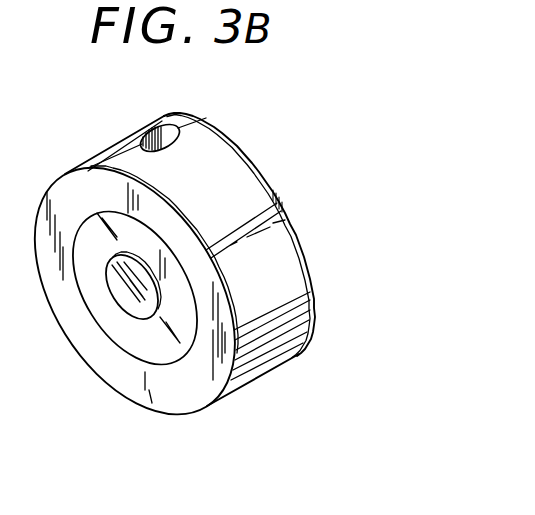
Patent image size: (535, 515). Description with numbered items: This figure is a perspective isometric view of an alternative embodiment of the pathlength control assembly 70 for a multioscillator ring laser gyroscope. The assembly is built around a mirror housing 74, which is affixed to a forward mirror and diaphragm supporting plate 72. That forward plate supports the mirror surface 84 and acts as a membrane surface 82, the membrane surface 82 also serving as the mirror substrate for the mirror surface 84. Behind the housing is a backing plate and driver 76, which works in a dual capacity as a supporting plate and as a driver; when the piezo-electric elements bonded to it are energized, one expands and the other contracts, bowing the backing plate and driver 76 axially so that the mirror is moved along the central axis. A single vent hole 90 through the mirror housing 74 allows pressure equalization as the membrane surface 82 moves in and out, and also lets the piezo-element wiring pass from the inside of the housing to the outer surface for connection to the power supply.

The pathlength control assembly 70 is at (281, 166).
The forward mirror and diaphragm supporting plate 72 is at (258, 323).
The mirror housing 74 is at (117, 143).
The backing plate and driver 76 is at (343, 236).
The membrane surface 82 is at (132, 345).
The mirror surface 84 is at (128, 302).
The vent hole 90 is at (161, 119).